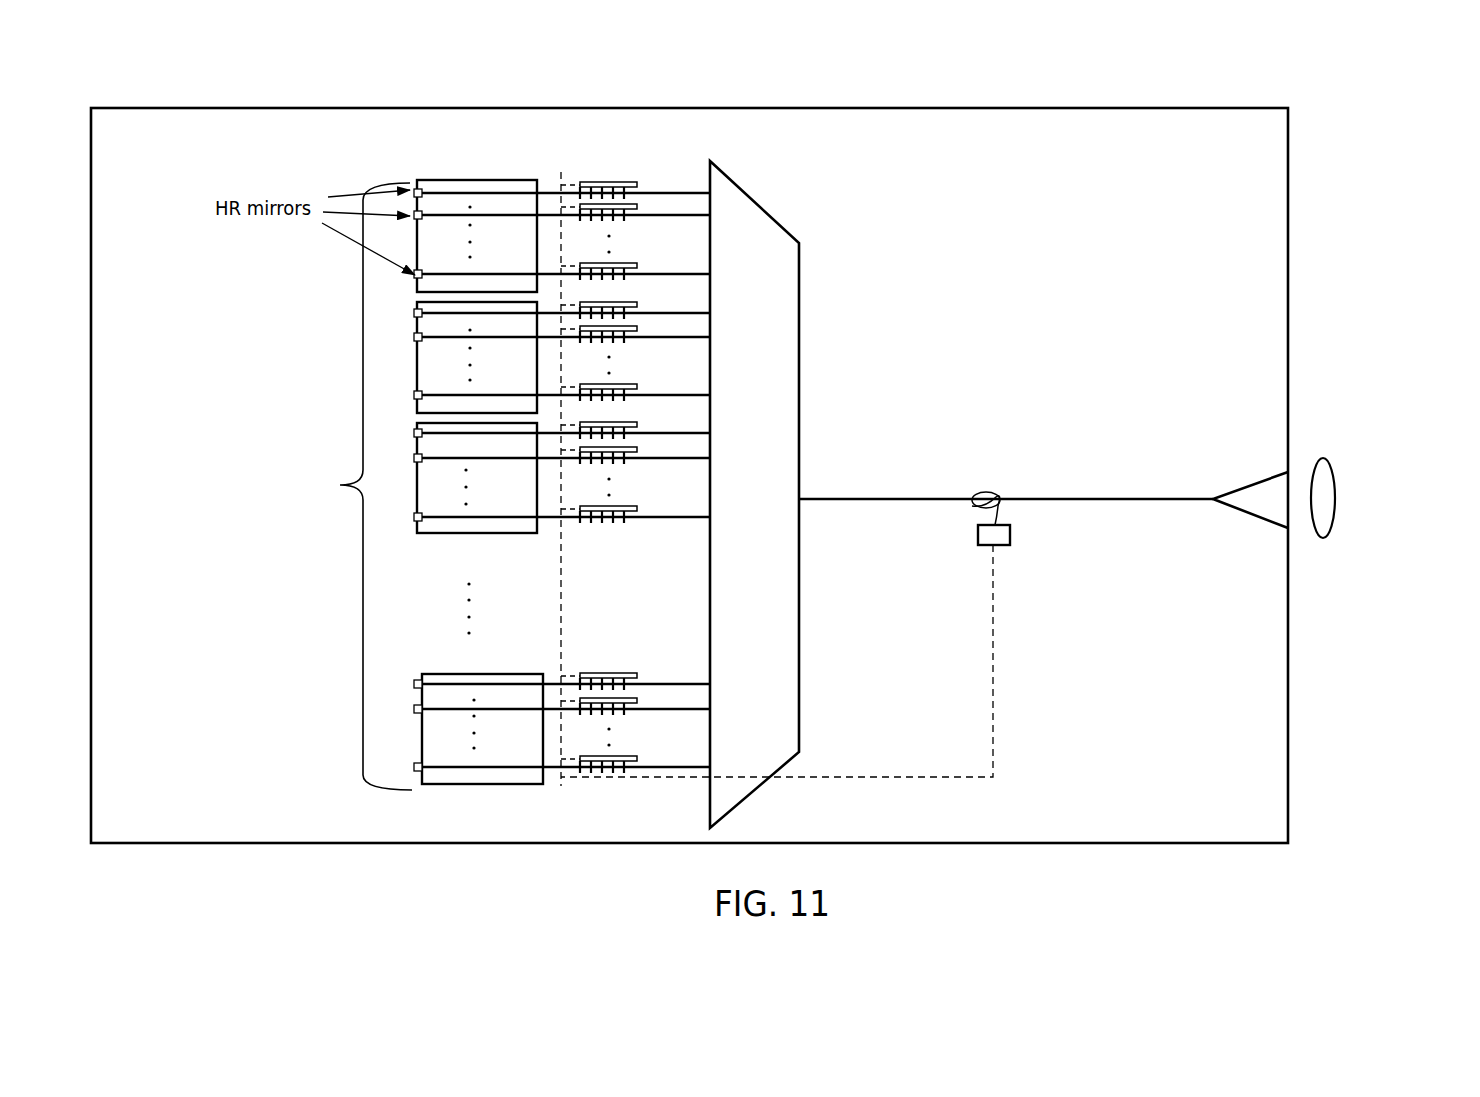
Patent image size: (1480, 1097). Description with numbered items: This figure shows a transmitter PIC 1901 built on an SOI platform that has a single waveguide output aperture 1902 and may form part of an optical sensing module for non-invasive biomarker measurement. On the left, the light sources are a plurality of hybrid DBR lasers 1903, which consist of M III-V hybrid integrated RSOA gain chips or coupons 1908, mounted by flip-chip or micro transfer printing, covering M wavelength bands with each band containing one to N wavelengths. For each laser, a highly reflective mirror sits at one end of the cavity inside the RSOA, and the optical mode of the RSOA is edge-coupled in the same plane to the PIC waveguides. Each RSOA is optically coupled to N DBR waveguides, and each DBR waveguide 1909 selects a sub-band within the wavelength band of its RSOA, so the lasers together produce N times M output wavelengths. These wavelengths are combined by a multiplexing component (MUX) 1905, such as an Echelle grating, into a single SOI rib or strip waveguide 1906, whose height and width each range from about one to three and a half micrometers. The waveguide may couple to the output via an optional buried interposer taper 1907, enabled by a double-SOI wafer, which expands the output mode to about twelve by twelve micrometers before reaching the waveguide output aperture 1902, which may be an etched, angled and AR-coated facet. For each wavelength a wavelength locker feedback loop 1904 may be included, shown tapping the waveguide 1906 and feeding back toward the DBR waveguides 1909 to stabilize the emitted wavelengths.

The transmitter PIC 1901 is at (1254, 88).
The waveguide output aperture 1902 is at (1293, 532).
The hybrid DBR lasers 1903 is at (340, 485).
The wavelength locker feedback loop 1904 is at (785, 634).
The multiplexing component (MUX) 1905 is at (754, 494).
The SOI rib or strip waveguide 1906 is at (1085, 497).
The buried interposer taper 1907 is at (1232, 530).
The III-V hybrid integrated RSOA gain chips 1908 is at (476, 785).
The DBR waveguide 1909 is at (600, 770).